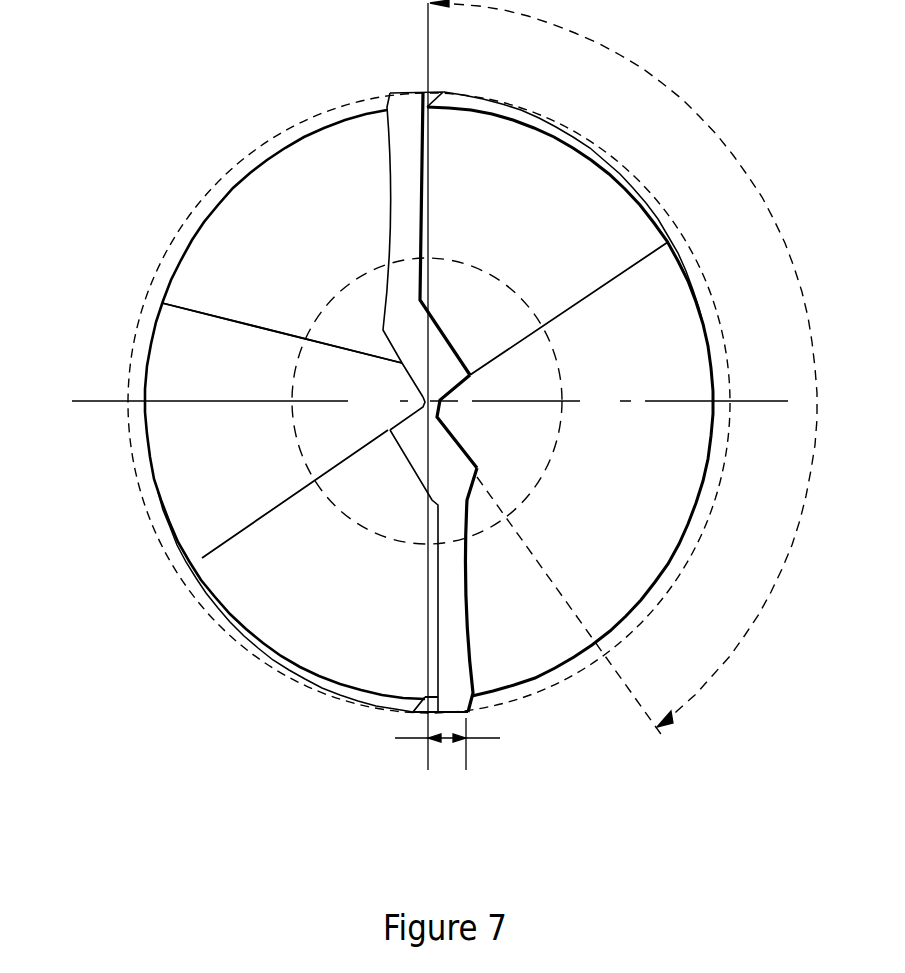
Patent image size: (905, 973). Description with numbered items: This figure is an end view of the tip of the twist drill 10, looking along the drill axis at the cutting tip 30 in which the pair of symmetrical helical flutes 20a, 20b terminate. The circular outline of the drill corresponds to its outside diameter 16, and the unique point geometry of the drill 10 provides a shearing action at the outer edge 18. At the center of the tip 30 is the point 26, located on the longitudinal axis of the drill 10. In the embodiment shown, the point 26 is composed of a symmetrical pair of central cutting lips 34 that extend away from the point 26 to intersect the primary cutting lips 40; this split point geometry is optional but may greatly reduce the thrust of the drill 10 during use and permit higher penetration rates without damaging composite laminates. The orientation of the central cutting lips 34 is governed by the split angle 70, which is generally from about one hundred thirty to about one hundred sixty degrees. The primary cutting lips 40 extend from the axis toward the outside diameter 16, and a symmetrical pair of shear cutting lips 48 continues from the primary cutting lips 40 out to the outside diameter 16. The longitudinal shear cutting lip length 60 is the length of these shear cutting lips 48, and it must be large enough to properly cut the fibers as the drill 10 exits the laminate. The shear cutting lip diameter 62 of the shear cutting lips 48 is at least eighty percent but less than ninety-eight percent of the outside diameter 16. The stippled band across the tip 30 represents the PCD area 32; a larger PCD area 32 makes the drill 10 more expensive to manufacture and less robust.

The twist drill 10 is at (705, 105).
The outside diameter 16 is at (706, 332).
The outer edge 18 is at (412, 90).
The helical flute 20a is at (600, 532).
The helical flute 20b is at (312, 247).
The point 26 is at (440, 398).
The cutting tip 30 is at (675, 230).
The PCD area 32 is at (468, 577).
The central cutting lips 34 is at (402, 374).
The primary cutting lips 40 is at (385, 303).
The shear cutting lips 48 is at (383, 100).
The longitudinal shear cutting lip length 60 is at (450, 740).
The shear cutting lip diameter 62 is at (727, 362).
The split angle 70 is at (822, 353).